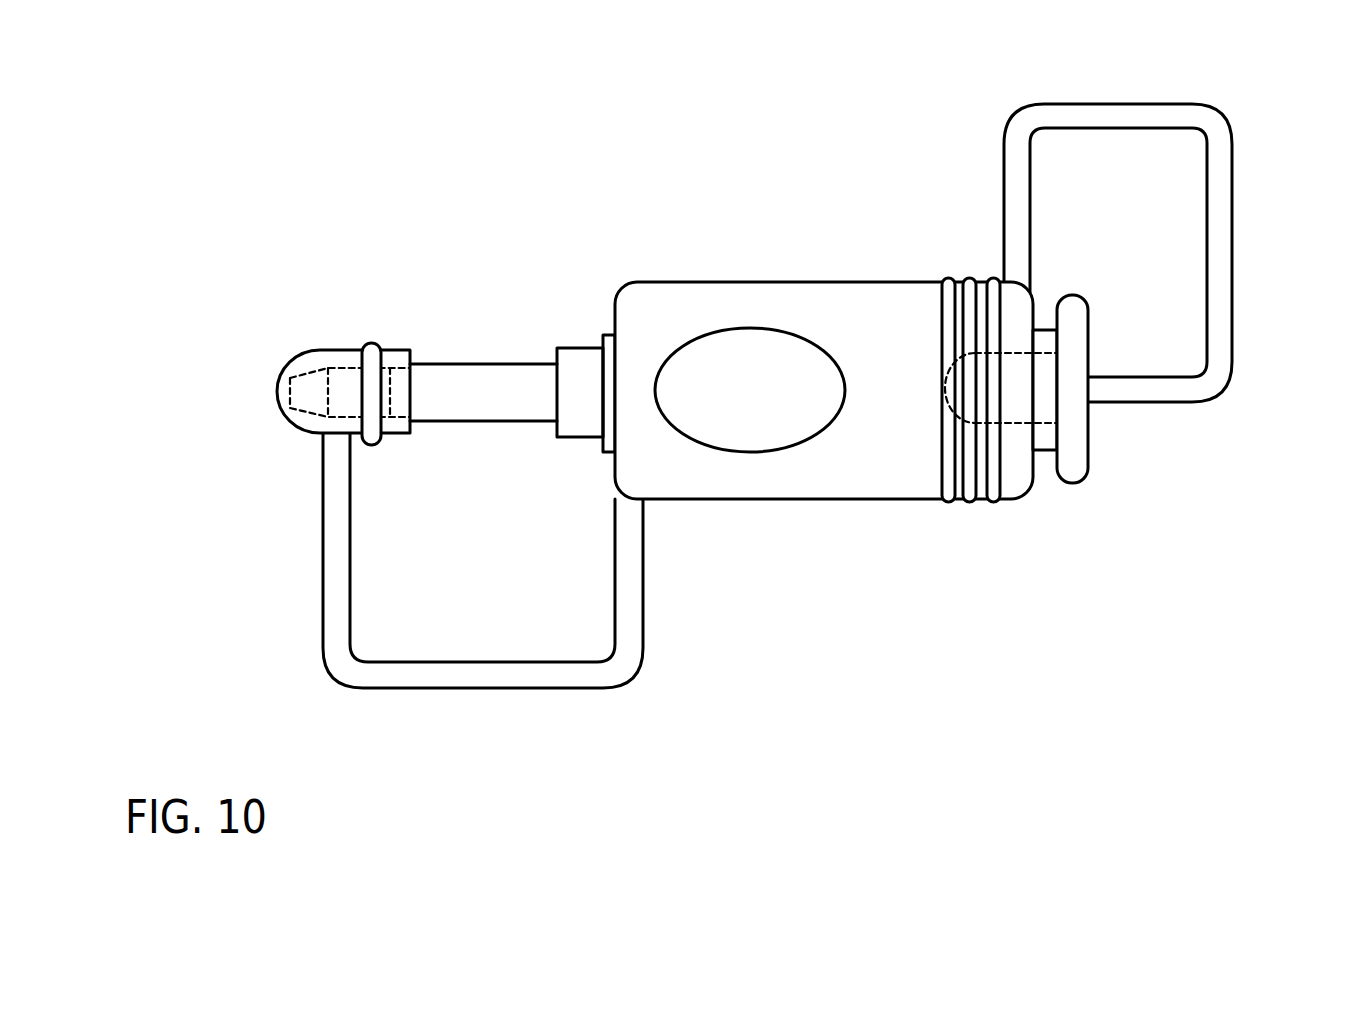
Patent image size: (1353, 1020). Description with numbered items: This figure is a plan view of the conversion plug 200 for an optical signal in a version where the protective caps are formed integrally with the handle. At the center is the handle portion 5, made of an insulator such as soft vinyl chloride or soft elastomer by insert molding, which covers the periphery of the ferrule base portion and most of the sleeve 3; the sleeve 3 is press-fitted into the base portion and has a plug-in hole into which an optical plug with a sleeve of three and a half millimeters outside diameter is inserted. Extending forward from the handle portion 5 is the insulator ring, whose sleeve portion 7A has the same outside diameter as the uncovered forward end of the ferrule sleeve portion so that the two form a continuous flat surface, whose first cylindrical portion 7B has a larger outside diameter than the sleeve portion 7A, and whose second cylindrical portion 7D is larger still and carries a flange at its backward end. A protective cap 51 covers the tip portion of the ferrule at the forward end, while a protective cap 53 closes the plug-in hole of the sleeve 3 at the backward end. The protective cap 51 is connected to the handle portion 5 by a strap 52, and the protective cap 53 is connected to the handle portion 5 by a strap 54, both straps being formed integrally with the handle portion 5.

The conversion plug for an optical signal 200 is at (779, 396).
The handle portion 5 is at (810, 499).
The sleeve 3 is at (1047, 453).
The sleeve portion of the insulator ring 7A is at (472, 377).
The first cylindrical portion of the insulator ring 7B is at (577, 347).
The second cylindrical portion of the insulator ring 7D is at (607, 335).
The protective cap 51 is at (333, 349).
The strap 52 is at (323, 626).
The protective cap 53 is at (945, 397).
The strap 54 is at (1222, 250).